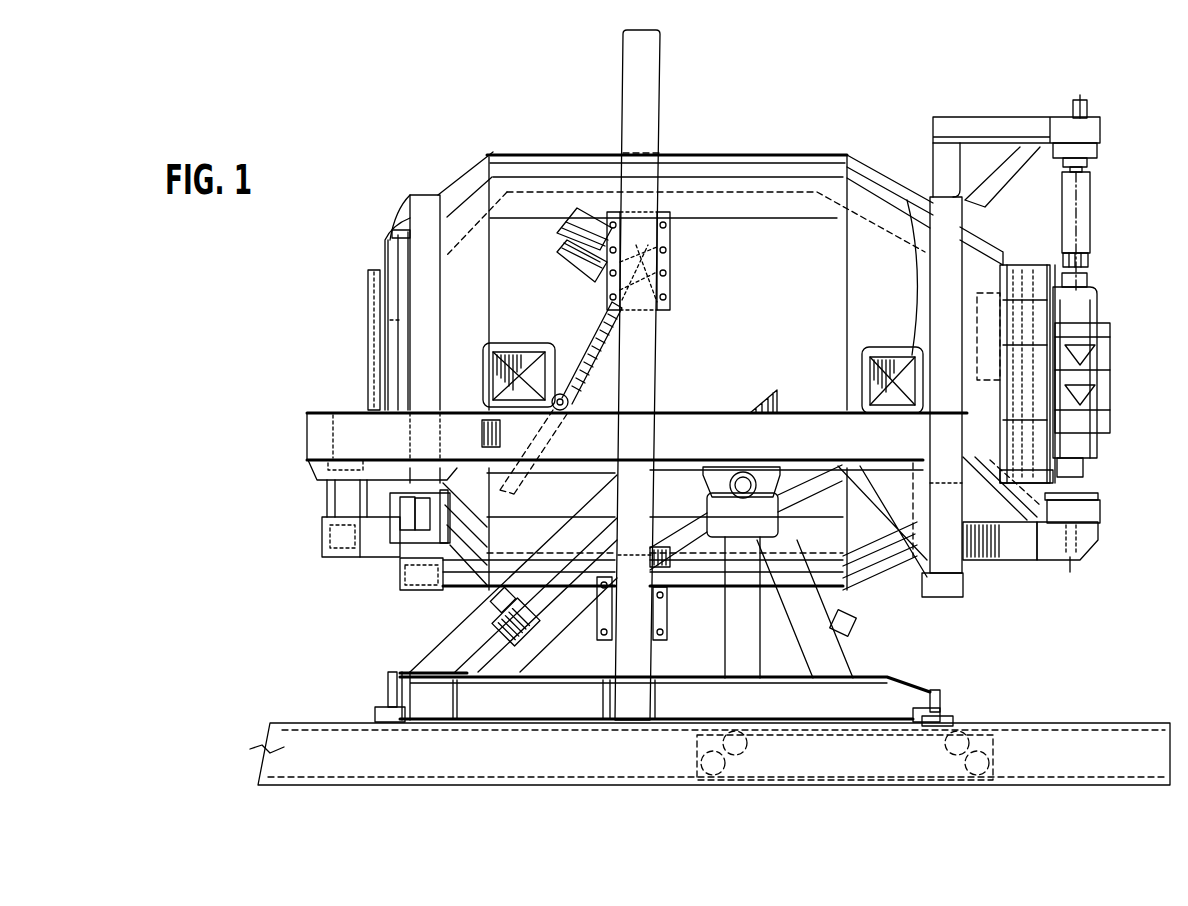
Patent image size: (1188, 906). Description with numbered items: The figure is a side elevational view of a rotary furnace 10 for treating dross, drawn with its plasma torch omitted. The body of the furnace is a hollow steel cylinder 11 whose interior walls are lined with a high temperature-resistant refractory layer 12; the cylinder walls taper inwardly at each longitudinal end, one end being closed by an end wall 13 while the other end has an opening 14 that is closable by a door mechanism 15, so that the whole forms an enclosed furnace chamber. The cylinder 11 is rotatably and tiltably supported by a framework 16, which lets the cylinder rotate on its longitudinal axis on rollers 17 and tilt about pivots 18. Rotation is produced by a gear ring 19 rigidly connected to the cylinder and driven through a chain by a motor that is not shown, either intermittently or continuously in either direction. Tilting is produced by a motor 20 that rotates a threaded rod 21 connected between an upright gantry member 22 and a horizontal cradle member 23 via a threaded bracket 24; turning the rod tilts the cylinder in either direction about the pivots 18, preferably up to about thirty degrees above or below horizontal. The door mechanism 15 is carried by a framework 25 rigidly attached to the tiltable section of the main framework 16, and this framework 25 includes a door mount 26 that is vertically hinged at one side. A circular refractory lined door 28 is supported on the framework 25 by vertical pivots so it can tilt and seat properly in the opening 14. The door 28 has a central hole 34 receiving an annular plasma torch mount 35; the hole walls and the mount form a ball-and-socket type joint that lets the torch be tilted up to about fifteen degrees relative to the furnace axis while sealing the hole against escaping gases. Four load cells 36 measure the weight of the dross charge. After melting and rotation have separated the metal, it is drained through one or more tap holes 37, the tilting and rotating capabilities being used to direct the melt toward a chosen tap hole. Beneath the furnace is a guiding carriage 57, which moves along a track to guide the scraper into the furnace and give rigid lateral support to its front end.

The furnace 10 is at (838, 152).
The hollow steel cylinder 11 is at (560, 152).
The refractory layer 12 is at (512, 165).
The end wall 13 is at (368, 315).
The opening 14 is at (983, 298).
The door mechanism 15 is at (1108, 278).
The framework 16 is at (302, 434).
The rollers 17 is at (780, 708).
The pivots 18 is at (862, 586).
The gear ring 19 is at (370, 272).
The motor 20 is at (567, 217).
The threaded rod 21 is at (586, 357).
The upright gantry member 22 is at (645, 137).
The horizontal cradle member 23 is at (722, 450).
The threaded bracket 24 is at (580, 407).
The framework 25 is at (957, 120).
The door mount 26 is at (1080, 215).
The refractory lined door 28 is at (1017, 312).
The central hole 34 is at (1085, 380).
The plasma torch mount 35 is at (1085, 355).
The load cells 36 is at (378, 710).
The tap holes 37 is at (485, 356).
The carriage 57 is at (815, 748).